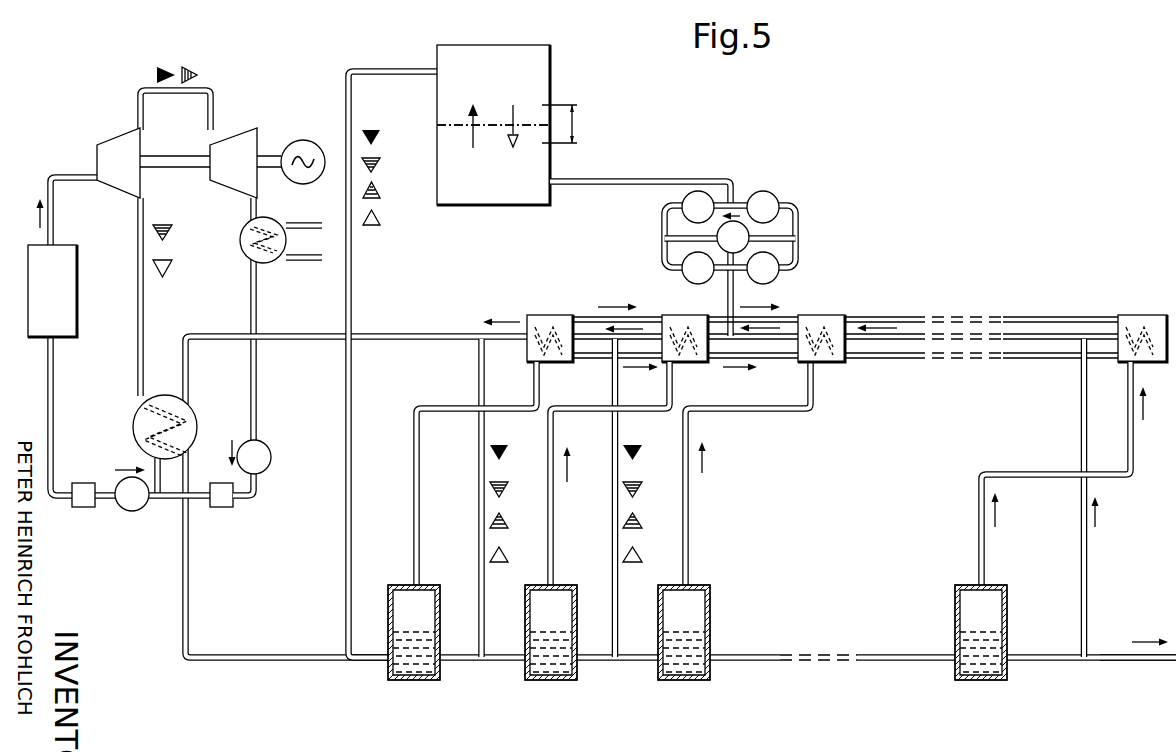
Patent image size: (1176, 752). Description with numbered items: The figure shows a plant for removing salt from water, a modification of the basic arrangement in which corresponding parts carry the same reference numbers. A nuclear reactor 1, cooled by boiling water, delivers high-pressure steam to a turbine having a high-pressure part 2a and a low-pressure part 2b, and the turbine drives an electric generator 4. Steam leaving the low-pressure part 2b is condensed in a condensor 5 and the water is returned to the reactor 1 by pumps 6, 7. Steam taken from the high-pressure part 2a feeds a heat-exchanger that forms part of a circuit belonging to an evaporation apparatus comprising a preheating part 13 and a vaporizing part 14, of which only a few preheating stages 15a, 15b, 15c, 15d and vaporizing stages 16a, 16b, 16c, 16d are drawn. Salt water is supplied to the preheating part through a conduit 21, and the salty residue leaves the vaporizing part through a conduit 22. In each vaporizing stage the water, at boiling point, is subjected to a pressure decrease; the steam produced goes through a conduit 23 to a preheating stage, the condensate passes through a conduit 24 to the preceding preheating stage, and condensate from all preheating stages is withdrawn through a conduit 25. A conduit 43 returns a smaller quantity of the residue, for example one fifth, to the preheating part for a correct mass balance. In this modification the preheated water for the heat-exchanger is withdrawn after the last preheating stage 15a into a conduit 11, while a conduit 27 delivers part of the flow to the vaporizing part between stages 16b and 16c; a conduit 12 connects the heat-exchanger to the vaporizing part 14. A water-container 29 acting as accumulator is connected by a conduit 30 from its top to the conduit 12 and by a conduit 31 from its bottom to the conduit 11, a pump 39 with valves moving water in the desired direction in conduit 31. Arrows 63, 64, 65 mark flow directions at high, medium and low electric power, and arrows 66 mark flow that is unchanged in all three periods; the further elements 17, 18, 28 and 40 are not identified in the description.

The nuclear reactor 1 is at (52, 370).
The high-pressure part 2a is at (120, 143).
The low-pressure part 2b is at (241, 137).
The electric generator 4 is at (305, 140).
The condensor 5 is at (273, 218).
The pump 6 is at (271, 455).
The pump 7 is at (132, 511).
The conduit 11 is at (733, 291).
The conduit 12 is at (260, 660).
The preheating part 13 is at (881, 284).
The vaporizing part 14 is at (798, 672).
The preheating stage 15a is at (556, 316).
The preheating stage 15b is at (689, 300).
The preheating stage 15c is at (808, 317).
The preheating stage 15d is at (1150, 317).
The vaporizing stage 16a is at (427, 667).
The vaporizing stage 16b is at (562, 667).
The vaporizing stage 16c is at (694, 667).
The vaporizing stage 16d is at (992, 667).
The supply line 17 is at (413, 334).
The return line section 18 is at (378, 660).
The conduit 21 is at (1095, 356).
The conduit 22 is at (1152, 661).
The conduit 23 is at (688, 495).
The conduit 24 is at (774, 358).
The conduit 25 is at (1100, 317).
The conduit 27 is at (612, 430).
The connecting line 28 is at (479, 430).
The water-container 29 is at (551, 62).
The conduit 30 is at (346, 517).
The conduit 31 is at (637, 181).
The pump 39 is at (717, 238).
The temperature boundary layer 40 is at (447, 124).
The conduit 43 is at (1090, 563).
The arrow 63 is at (381, 137).
The arrow 64 is at (378, 190).
The arrow 65 is at (381, 218).
The arrow 66 is at (45, 205).